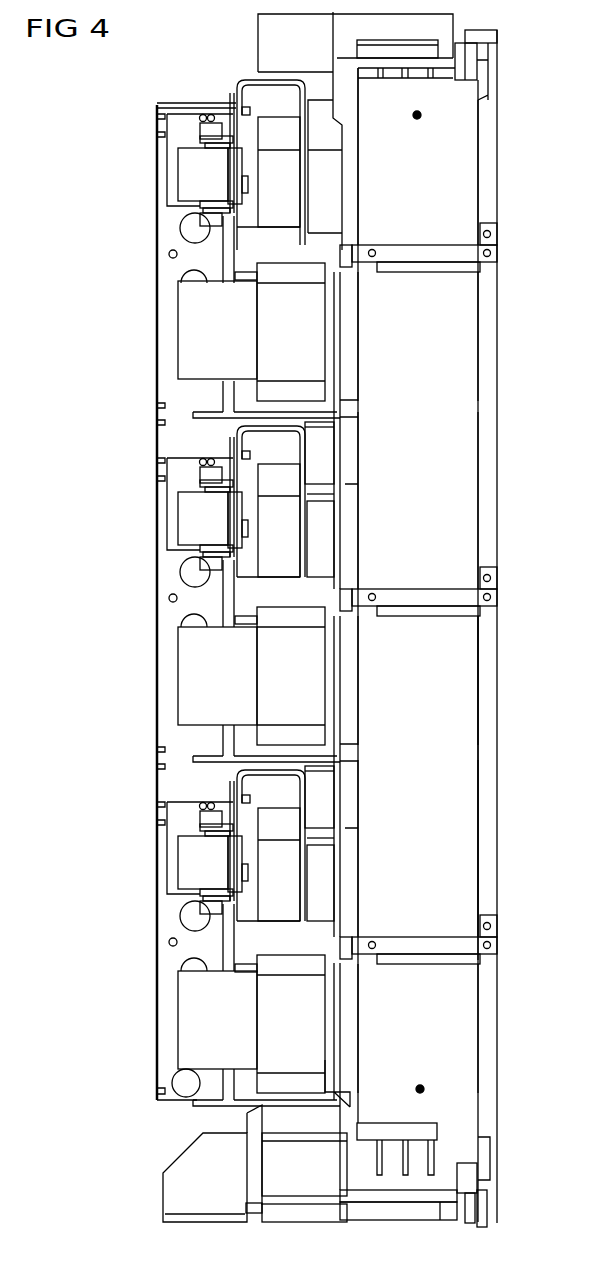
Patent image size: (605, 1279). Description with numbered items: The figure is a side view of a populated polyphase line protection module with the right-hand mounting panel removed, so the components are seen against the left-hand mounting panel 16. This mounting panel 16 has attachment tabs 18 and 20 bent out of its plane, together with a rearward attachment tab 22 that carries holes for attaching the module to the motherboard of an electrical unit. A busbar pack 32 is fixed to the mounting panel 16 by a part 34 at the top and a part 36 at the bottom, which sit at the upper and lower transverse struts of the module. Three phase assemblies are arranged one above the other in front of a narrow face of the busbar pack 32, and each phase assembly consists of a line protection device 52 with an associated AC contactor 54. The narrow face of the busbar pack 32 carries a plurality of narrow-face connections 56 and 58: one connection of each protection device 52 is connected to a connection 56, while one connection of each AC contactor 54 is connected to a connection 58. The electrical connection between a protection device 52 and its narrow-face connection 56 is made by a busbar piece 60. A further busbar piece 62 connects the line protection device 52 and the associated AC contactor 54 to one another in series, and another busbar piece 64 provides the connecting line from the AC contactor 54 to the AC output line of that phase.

The mounting panel 16 is at (203, 393).
The attachment tab 18 is at (260, 157).
The attachment tab 20 is at (340, 666).
The rearward attachment tab 22 is at (498, 420).
The busbar pack 32 is at (445, 742).
The part 34 is at (473, 37).
The part 36 is at (468, 1210).
The line protection device 52 is at (197, 518).
The AC contactor 54 is at (215, 674).
The narrow-face connection 56 is at (325, 551).
The narrow-face connection 58 is at (357, 432).
The busbar piece 60 is at (252, 78).
The busbar piece 62 is at (233, 602).
The busbar piece 64 is at (225, 414).